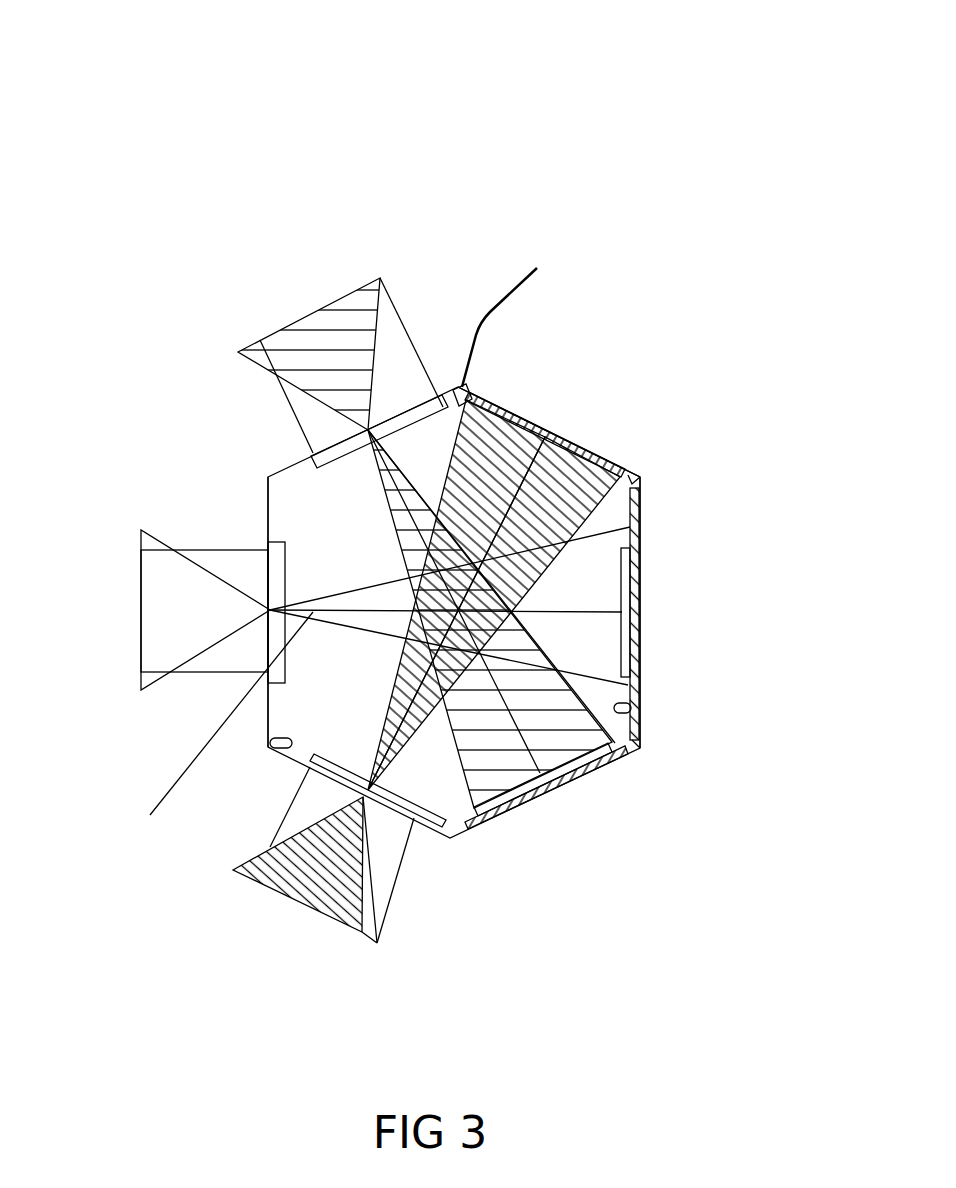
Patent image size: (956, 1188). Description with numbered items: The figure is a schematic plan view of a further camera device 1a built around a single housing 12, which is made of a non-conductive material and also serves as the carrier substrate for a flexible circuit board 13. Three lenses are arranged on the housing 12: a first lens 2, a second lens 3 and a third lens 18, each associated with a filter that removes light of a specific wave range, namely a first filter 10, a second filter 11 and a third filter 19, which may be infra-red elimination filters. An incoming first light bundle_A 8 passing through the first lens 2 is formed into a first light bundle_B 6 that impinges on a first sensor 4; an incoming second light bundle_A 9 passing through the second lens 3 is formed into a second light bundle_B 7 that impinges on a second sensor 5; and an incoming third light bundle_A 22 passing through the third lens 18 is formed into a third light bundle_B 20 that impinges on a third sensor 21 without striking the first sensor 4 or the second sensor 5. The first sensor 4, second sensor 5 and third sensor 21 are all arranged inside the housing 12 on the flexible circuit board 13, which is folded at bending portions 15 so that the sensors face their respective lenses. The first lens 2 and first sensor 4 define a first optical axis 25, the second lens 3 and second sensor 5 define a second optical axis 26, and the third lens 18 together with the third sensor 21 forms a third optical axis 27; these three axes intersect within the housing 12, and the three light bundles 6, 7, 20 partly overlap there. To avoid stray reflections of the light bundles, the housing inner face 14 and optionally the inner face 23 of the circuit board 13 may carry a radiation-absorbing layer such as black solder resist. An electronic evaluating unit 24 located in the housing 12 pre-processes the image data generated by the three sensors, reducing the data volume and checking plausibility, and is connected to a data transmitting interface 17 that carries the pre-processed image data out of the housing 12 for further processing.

The camera device 1a is at (522, 172).
The first lens 2 is at (222, 558).
The second lens 3 is at (302, 810).
The first sensor 4 is at (640, 590).
The second sensor 5 is at (590, 453).
The first light bundle_B 6 is at (588, 632).
The second light bundle_B 7 is at (532, 427).
The first light bundle_A 8 is at (150, 635).
The second light bundle_A 9 is at (297, 863).
The first filter 10 is at (273, 548).
The second filter 11 is at (420, 817).
The housing 12 is at (268, 477).
The flexible circuit board 13 is at (498, 407).
The housing inner face 14 is at (268, 747).
The bending portions 15 is at (640, 478).
The data transmitting interface 17 is at (515, 315).
The third lens 18 is at (377, 279).
The third filter 19 is at (313, 455).
The third light bundle_B 20 is at (488, 773).
The third sensor 21 is at (607, 767).
The third light bundle_A 22 is at (330, 330).
The inner face 23 is at (633, 717).
The electronic evaluating unit 24 is at (470, 390).
The first optical axis 25 is at (372, 691).
The second optical axis 26 is at (493, 452).
The third optical axis 27 is at (570, 790).